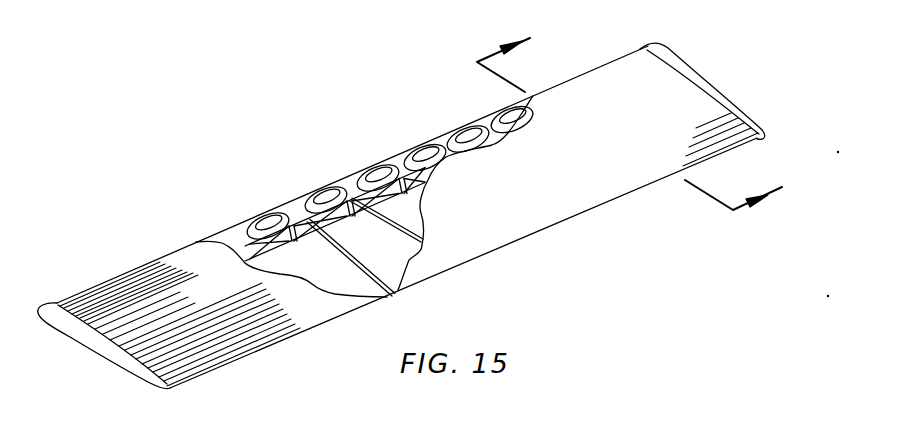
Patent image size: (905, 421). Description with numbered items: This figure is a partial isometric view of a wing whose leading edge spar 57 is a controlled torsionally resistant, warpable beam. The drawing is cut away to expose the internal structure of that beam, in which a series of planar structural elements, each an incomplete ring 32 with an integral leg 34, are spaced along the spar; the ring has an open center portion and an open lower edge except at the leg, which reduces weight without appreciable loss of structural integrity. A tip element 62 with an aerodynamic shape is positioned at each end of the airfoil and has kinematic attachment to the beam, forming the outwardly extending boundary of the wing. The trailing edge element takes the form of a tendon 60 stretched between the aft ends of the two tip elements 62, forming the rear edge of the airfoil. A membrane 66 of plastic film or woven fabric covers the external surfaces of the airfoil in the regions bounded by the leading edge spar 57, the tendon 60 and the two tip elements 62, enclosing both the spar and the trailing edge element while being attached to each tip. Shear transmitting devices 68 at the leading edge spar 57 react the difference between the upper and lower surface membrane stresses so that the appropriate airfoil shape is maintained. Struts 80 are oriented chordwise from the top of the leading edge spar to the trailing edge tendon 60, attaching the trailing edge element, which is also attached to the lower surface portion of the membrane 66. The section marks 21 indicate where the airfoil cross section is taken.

The section line 21- 21 is at (629, 115).
The incomplete ring 32 is at (251, 228).
The leg 34 is at (340, 196).
The leading edge spar 57 is at (392, 152).
The tendon 60 is at (392, 297).
The tip element 62 is at (127, 363).
The membrane 66 is at (275, 320).
The shear transmitting devices 68 is at (481, 127).
The struts 80 is at (358, 273).